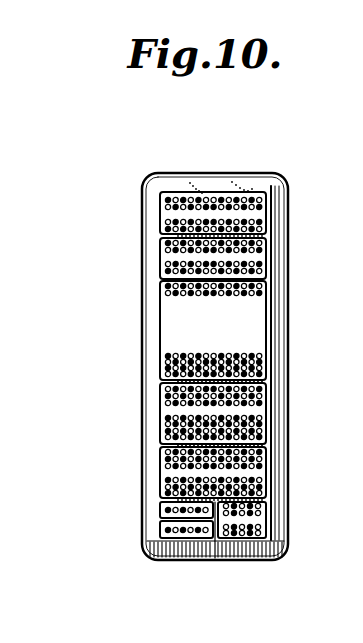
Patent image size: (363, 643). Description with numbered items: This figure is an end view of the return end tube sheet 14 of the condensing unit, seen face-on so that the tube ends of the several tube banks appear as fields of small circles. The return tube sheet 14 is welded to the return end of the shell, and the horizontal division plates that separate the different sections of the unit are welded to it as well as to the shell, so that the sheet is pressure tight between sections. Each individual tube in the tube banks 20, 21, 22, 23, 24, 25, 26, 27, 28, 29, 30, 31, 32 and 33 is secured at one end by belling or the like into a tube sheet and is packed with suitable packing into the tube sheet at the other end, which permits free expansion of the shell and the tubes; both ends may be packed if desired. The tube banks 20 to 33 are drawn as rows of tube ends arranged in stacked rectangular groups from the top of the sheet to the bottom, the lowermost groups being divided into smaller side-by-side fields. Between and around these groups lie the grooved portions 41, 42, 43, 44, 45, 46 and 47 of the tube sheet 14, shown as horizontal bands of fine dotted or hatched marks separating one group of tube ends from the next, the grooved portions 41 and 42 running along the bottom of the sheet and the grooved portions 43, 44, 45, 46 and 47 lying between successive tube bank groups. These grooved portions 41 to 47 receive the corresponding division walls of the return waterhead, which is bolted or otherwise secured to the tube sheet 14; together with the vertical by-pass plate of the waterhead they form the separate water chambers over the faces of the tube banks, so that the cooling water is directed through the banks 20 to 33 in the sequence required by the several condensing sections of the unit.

The return tube sheet 14 is at (232, 178).
The tube bank 20 is at (165, 543).
The tube bank 21 is at (258, 529).
The tube bank 22 is at (257, 512).
The tube bank 23 is at (165, 513).
The tube bank 24 is at (165, 492).
The tube bank 25 is at (165, 462).
The tube bank 26 is at (165, 435).
The tube bank 27 is at (165, 400).
The tube bank 28 is at (165, 370).
The tube bank 29 is at (165, 293).
The tube bank 30 is at (165, 271).
The tube bank 31 is at (165, 250).
The tube bank 32 is at (165, 229).
The tube bank 33 is at (165, 207).
The grooved portion 41 is at (222, 547).
The grooved portion 42 is at (183, 543).
The grooved portion 43 is at (260, 503).
The grooved portion 44 is at (262, 447).
The grooved portion 45 is at (262, 382).
The grooved portion 46 is at (262, 280).
The grooved portion 47 is at (262, 236).